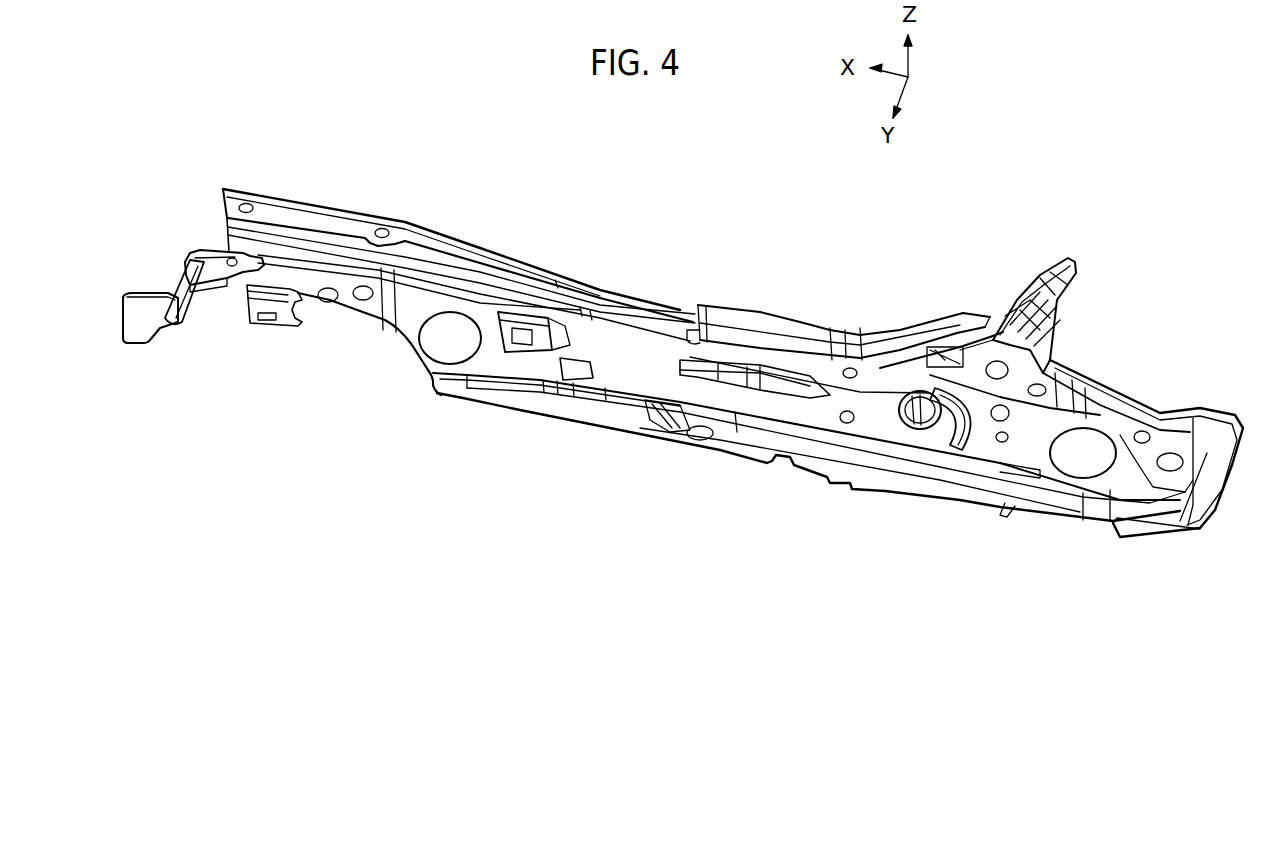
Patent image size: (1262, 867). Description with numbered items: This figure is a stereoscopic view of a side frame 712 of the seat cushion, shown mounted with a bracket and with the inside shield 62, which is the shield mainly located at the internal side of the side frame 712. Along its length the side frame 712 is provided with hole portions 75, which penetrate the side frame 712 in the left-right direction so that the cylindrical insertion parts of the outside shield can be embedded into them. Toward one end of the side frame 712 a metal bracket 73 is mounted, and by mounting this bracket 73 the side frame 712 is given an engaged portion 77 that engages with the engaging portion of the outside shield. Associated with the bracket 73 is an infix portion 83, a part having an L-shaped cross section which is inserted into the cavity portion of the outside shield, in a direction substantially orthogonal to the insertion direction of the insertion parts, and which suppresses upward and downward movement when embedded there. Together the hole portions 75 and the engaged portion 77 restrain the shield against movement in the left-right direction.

The side frame 712 is at (430, 228).
The inside shield 62 is at (760, 330).
The hole portion 75 is at (573, 380).
The bracket 73 is at (196, 244).
The engaged portion 77 is at (190, 307).
The infix portion 83 is at (150, 290).